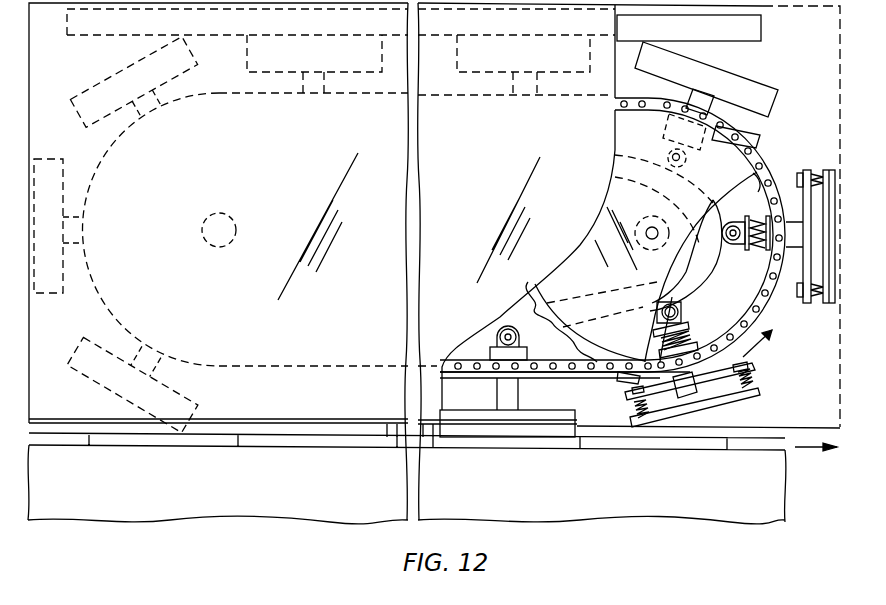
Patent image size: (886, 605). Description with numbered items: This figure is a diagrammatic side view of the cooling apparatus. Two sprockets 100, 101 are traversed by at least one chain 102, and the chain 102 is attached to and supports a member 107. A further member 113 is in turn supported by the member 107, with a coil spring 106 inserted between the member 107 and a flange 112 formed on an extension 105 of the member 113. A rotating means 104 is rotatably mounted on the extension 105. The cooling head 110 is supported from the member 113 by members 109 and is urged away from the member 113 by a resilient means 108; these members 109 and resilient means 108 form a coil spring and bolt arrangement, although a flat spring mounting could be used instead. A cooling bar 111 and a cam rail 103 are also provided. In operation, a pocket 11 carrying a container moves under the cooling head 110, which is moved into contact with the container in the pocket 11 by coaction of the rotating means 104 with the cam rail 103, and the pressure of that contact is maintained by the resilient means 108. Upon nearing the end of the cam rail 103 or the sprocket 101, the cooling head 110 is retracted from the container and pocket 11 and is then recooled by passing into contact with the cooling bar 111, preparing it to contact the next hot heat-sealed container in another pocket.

The pocket 11 is at (748, 443).
The sprocket 100 is at (105, 305).
The sprocket 101 is at (560, 347).
The chain 102 is at (757, 176).
The cam rail 103 is at (548, 292).
The rotating means 104 is at (667, 275).
The extension 105 is at (678, 303).
The coil spring 106 is at (690, 340).
The member 107 is at (768, 262).
The resilient means 108 is at (817, 173).
The members 109 is at (798, 173).
The cooling head 110 is at (827, 300).
The cooling bar 111 is at (762, 33).
The flange 112 is at (653, 327).
The member 113 is at (801, 300).